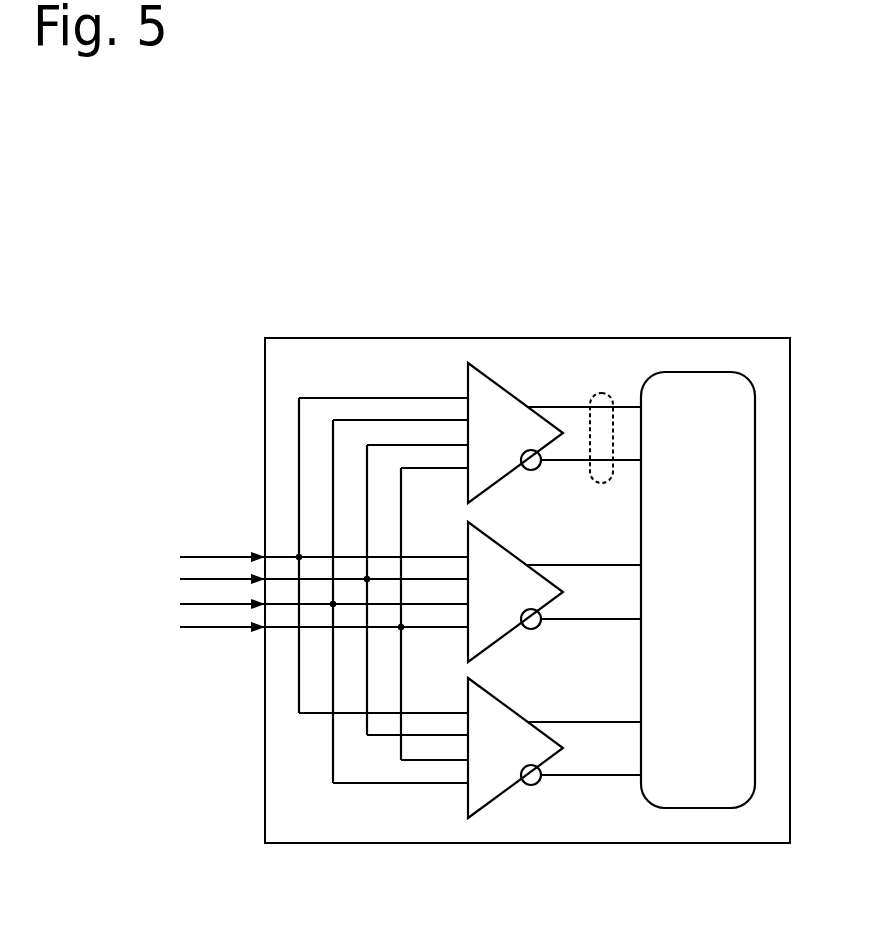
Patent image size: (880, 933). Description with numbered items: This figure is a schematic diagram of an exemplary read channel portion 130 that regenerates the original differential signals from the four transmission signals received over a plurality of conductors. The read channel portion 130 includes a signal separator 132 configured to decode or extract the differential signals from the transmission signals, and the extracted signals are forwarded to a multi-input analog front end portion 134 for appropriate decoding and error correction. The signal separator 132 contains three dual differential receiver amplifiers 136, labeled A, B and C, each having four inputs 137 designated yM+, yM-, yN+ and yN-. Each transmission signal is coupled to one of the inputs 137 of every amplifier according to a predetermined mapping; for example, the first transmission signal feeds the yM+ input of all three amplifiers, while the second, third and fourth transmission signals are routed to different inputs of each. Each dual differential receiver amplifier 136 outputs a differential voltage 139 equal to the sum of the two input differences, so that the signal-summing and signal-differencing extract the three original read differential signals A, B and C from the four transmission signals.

The read channel portion 130 is at (145, 226).
The signal separator 132 is at (423, 350).
The multi-input analog front end portion 134 is at (673, 372).
The dual differential receiver amplifier 136 is at (527, 722).
The inputs 137 is at (412, 437).
The differential voltage 139 is at (602, 378).